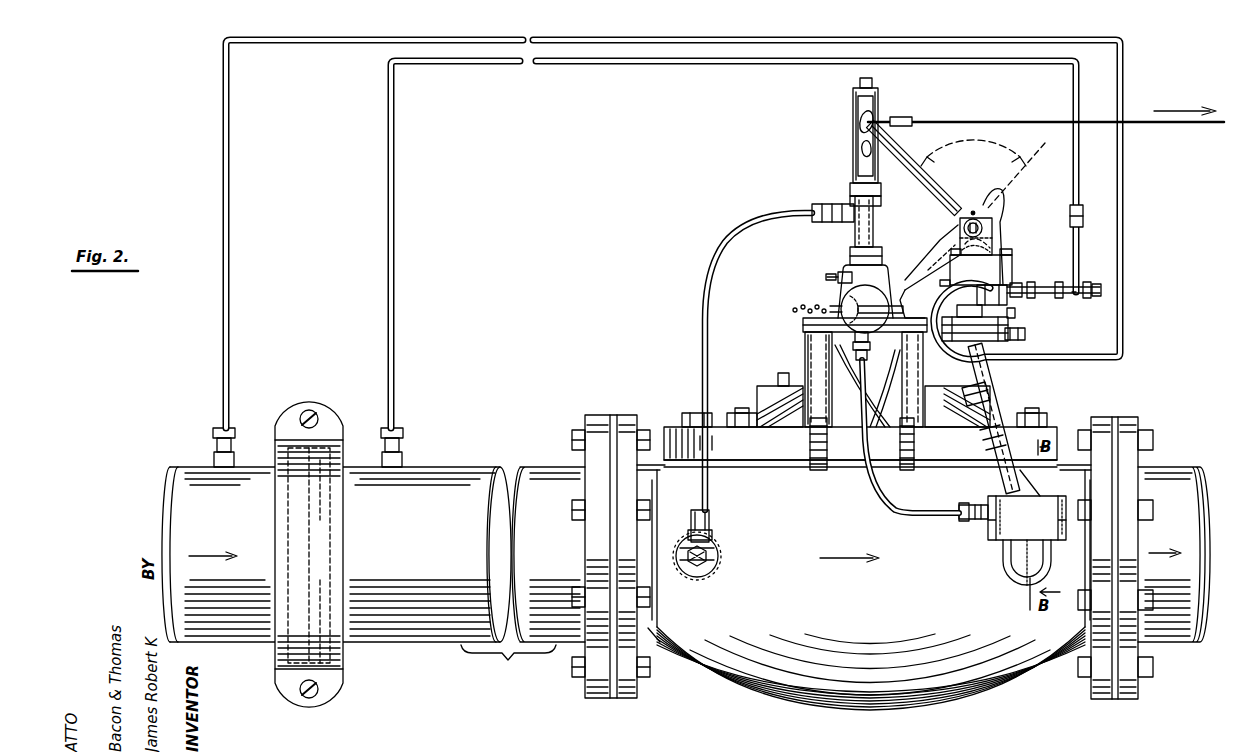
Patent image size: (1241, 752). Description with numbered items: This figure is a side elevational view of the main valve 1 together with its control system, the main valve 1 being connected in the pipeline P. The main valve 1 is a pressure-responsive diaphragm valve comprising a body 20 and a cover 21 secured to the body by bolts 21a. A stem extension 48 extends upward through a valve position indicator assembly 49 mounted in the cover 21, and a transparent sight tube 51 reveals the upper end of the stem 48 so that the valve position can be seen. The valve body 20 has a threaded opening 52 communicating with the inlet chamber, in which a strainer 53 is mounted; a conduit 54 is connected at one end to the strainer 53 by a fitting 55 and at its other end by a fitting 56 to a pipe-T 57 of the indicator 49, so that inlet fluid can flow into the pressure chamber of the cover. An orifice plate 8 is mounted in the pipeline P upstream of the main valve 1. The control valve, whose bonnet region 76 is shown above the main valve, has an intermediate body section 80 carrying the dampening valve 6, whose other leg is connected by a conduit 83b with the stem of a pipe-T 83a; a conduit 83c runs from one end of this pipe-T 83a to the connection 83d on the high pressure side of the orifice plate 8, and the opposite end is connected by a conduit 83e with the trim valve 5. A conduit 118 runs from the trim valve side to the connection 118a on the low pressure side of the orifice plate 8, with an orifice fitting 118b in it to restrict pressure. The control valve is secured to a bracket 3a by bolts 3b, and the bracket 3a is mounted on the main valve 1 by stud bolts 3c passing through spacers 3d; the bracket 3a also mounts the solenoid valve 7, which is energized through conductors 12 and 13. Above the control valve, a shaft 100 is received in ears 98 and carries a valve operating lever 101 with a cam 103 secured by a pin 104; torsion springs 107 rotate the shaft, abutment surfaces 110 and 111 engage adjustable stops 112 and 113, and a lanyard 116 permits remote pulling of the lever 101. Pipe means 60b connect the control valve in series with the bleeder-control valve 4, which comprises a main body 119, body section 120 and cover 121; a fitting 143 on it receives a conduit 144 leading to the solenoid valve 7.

The main valve 1 is at (950, 695).
The bracket 3a is at (892, 260).
The bolts 3b is at (950, 272).
The stud bolts 3c is at (815, 447).
The spacers 3d is at (805, 365).
The operating-fluid bleeder-control valve 4 is at (957, 548).
The needle type trim valve 5 is at (1094, 278).
The needle type dampening valve 6 is at (1022, 336).
The 3-way solenoid-operated valve 7 is at (868, 347).
The orifice plate 8 is at (300, 513).
The conductor 12 is at (808, 302).
The conductor 13 is at (790, 306).
The body 20 is at (745, 683).
The cover 21 is at (762, 400).
The bolts 21a is at (690, 412).
The stem extension 48 is at (855, 152).
The valve position indicator assembly 49 is at (845, 97).
The transparent sight tube 51 is at (856, 106).
The threaded opening 52 is at (700, 578).
The strainer 53 is at (722, 548).
The conduit 54 is at (700, 318).
The fitting 55 is at (710, 525).
The fitting 56 is at (815, 208).
The pipe-T 57 is at (852, 188).
The pipe means 60b is at (990, 436).
The bonnet 76 is at (895, 272).
The intermediate body section 80 is at (995, 326).
The pipe-T 83a is at (988, 286).
The conduit 83b is at (1012, 312).
The conduit 83c is at (346, 40).
The connection 83d is at (210, 435).
The conduit 83e is at (1072, 296).
The ears 98 is at (960, 238).
The shaft 100 is at (960, 225).
The valve operating lever 101 is at (903, 158).
The cam 103 is at (1004, 242).
The pin 104 is at (973, 210).
The torsion spring 107 is at (1004, 222).
The abutment surface 110 is at (960, 254).
The abutment surface 111 is at (990, 185).
The adjustable stop 112 is at (950, 262).
The adjustable stop 113 is at (1010, 260).
The lanyard 116 is at (1168, 124).
The conduit 118 is at (504, 62).
The connection 118a is at (400, 438).
The orifice fitting 118b is at (1072, 215).
The main body 119 is at (1010, 575).
The body section 120 is at (1050, 545).
The cover 121 is at (1045, 500).
The fitting 143 is at (965, 504).
The conduit 144 is at (877, 474).
The pipeline P is at (500, 462).